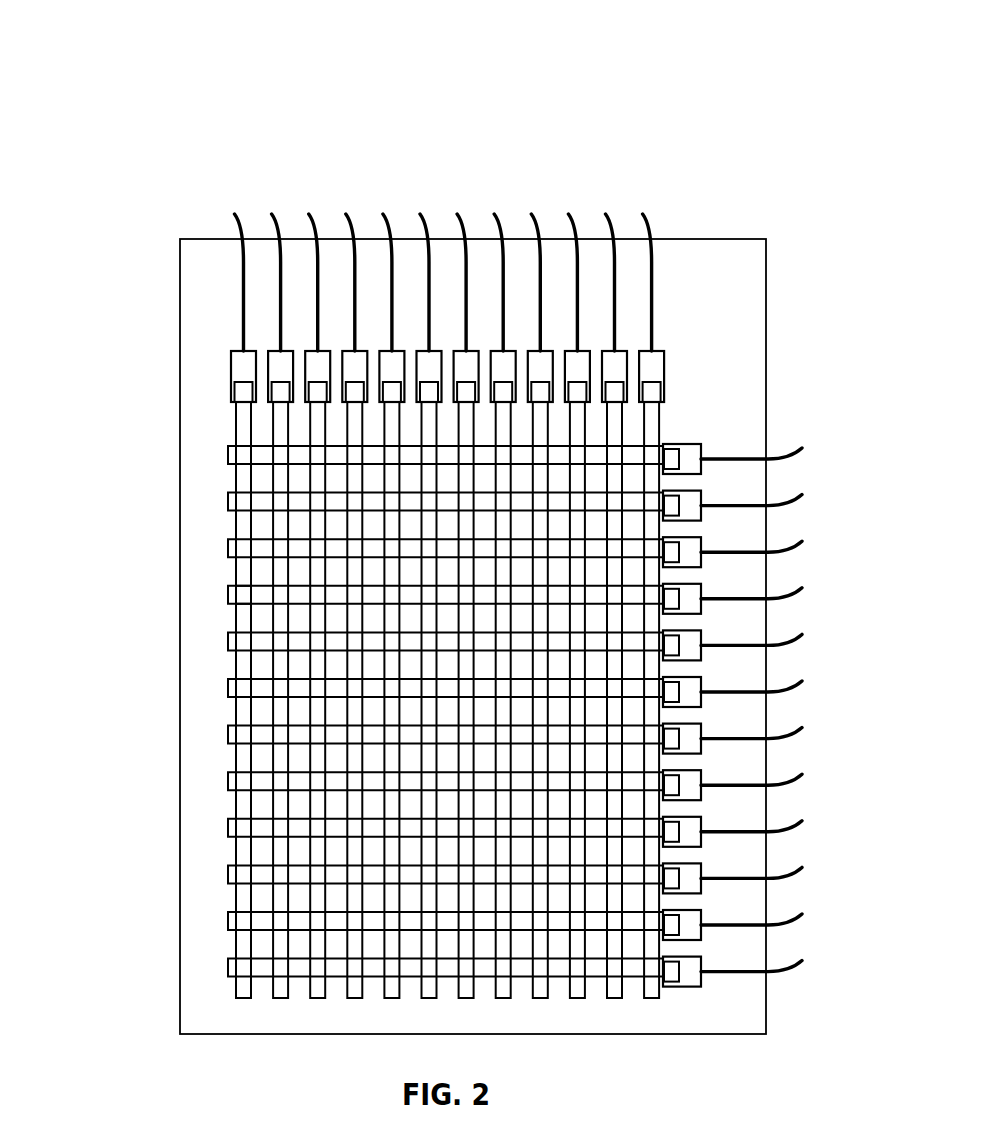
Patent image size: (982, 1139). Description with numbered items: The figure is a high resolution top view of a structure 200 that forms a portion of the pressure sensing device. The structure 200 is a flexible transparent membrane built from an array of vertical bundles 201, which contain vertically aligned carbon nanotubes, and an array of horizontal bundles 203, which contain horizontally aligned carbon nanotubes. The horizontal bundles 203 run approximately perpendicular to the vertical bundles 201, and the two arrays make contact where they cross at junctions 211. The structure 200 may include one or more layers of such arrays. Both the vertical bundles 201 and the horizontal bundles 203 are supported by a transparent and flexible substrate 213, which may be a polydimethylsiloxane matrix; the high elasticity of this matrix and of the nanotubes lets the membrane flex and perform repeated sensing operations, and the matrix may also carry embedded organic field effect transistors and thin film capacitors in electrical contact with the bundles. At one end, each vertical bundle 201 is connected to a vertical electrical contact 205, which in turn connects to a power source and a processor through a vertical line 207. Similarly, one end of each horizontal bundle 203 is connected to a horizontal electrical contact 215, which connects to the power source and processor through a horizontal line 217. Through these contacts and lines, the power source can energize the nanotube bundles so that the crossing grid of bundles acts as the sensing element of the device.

The structure 200 is at (143, 88).
The vertical bundles 201 is at (238, 479).
The horizontal bundles 203 is at (259, 721).
The vertical electrical contact 205 is at (232, 374).
The vertical line 207 is at (424, 212).
The junctions 211 is at (245, 592).
The substrate 213 is at (735, 372).
The horizontal electrical contact 215 is at (703, 567).
The horizontal line 217 is at (801, 774).